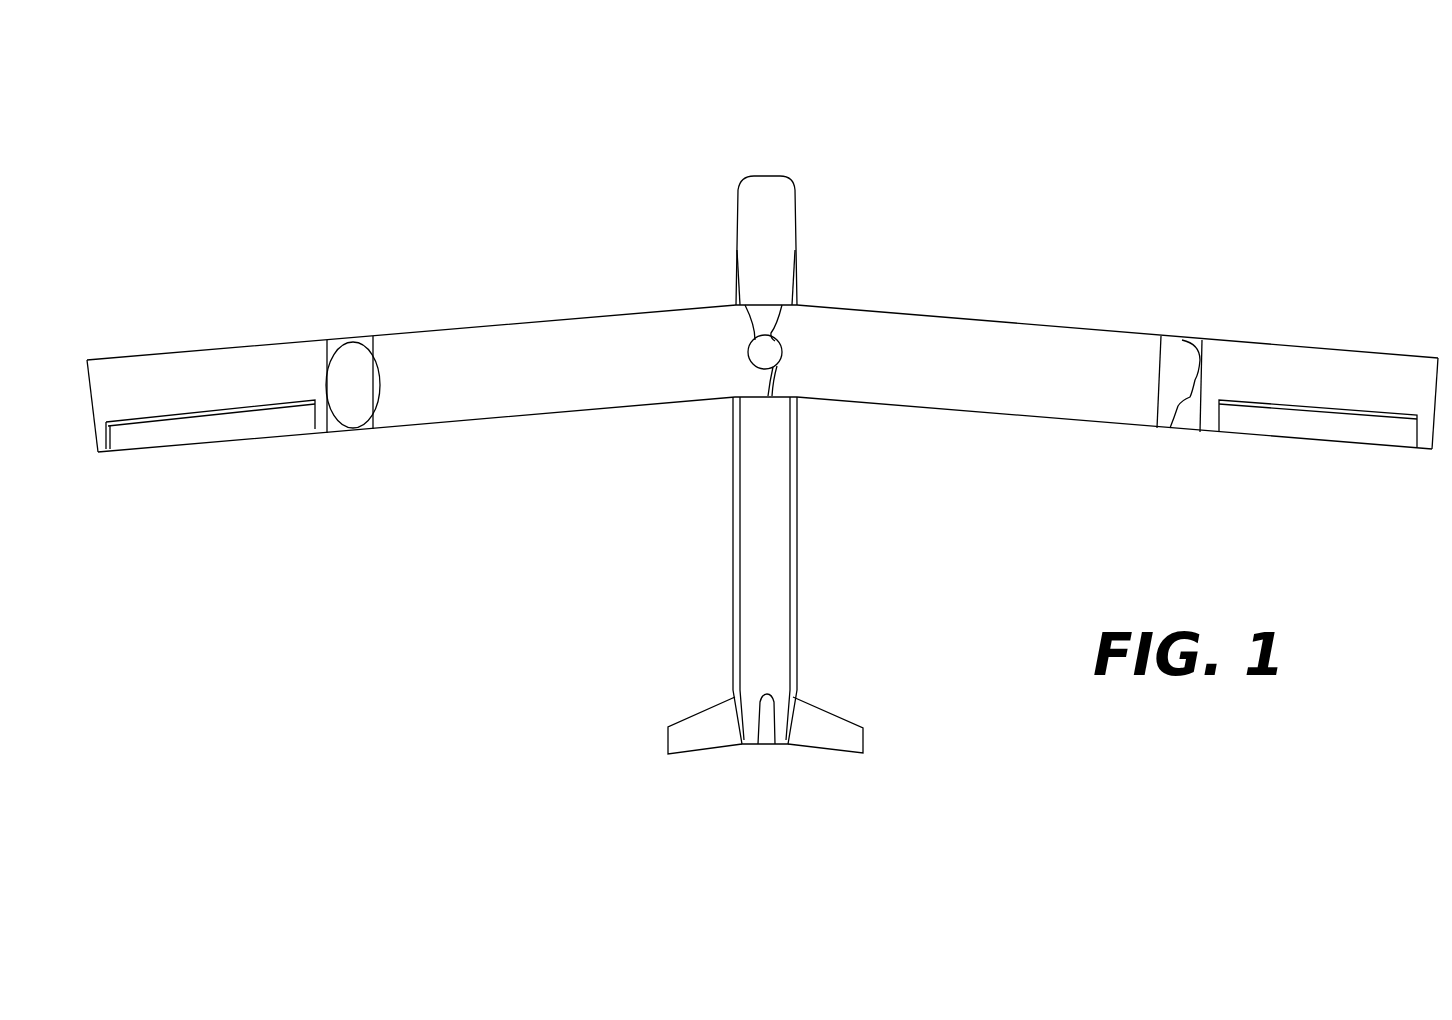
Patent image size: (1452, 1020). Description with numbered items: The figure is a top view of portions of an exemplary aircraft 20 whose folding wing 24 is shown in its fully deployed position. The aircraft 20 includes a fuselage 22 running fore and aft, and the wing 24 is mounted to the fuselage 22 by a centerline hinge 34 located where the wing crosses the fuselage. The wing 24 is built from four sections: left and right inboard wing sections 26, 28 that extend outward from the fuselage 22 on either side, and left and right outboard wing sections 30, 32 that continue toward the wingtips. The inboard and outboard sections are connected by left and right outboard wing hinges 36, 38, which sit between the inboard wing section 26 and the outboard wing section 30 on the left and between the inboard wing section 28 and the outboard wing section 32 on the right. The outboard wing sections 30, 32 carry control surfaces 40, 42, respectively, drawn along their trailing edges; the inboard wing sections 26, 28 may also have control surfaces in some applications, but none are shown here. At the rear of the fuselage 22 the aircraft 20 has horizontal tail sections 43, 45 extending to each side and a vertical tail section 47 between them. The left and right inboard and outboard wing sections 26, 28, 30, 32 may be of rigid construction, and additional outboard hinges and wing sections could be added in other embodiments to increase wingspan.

The aircraft 20 is at (642, 101).
The fuselage 22 is at (783, 190).
The wing 24 is at (893, 266).
The left inboard wing section 26 is at (592, 318).
The right inboard wing section 28 is at (969, 319).
The left outboard wing section 30 is at (240, 347).
The right outboard wing section 32 is at (1297, 346).
The centerline hinge 34 is at (765, 338).
The left outboard wing hinge 36 is at (352, 345).
The right outboard wing hinge 38 is at (1207, 352).
The control surface 40 is at (198, 435).
The control surface 42 is at (1287, 420).
The horizontal tail section 43 is at (688, 720).
The horizontal tail section 45 is at (842, 713).
The vertical tail section 47 is at (768, 738).